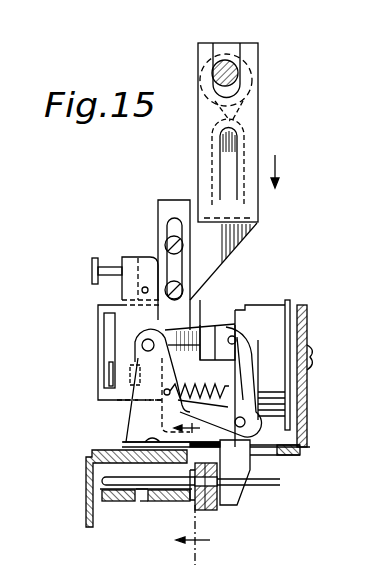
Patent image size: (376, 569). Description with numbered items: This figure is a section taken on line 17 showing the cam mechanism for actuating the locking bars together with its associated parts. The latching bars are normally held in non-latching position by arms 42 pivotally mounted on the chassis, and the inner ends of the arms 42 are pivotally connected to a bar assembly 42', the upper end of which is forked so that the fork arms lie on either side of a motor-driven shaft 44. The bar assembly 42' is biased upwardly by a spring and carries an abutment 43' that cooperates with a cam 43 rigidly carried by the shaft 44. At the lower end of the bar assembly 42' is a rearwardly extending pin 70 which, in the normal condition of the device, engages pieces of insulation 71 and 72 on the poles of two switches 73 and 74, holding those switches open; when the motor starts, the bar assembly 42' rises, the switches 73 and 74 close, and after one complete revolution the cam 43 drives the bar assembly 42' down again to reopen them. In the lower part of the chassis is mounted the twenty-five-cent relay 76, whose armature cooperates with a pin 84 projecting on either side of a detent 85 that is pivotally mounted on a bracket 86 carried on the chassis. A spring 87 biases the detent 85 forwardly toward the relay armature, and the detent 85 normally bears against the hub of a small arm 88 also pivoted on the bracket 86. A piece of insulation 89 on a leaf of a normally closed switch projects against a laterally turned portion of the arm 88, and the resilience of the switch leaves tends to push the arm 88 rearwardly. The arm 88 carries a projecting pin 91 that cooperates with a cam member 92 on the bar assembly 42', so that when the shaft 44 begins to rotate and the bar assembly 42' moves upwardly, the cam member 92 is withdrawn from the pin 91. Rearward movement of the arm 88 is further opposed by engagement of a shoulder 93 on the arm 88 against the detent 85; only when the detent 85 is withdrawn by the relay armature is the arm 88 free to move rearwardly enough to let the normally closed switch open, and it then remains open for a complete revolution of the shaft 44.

The section line 17- 17 is at (192, 488).
The arm 42 is at (229, 365).
The bar assembly 42' is at (205, 372).
The cam 43 is at (254, 132).
The abutment 43' is at (264, 161).
The shaft 44 is at (238, 70).
The pin 70 is at (128, 484).
The piece of insulation 71 is at (150, 502).
The piece of insulation 72 is at (139, 502).
The switch 73 is at (157, 502).
The switch 74 is at (114, 502).
The relay 76 is at (277, 347).
The pin 84 is at (240, 337).
The detent 85 is at (210, 322).
The bracket 86 is at (130, 415).
The spring 87 is at (173, 385).
The arm 88 is at (123, 320).
The piece of insulation 89 is at (103, 258).
The pin 91 is at (142, 290).
The cam member 92 is at (139, 258).
The shoulder 93 is at (176, 329).